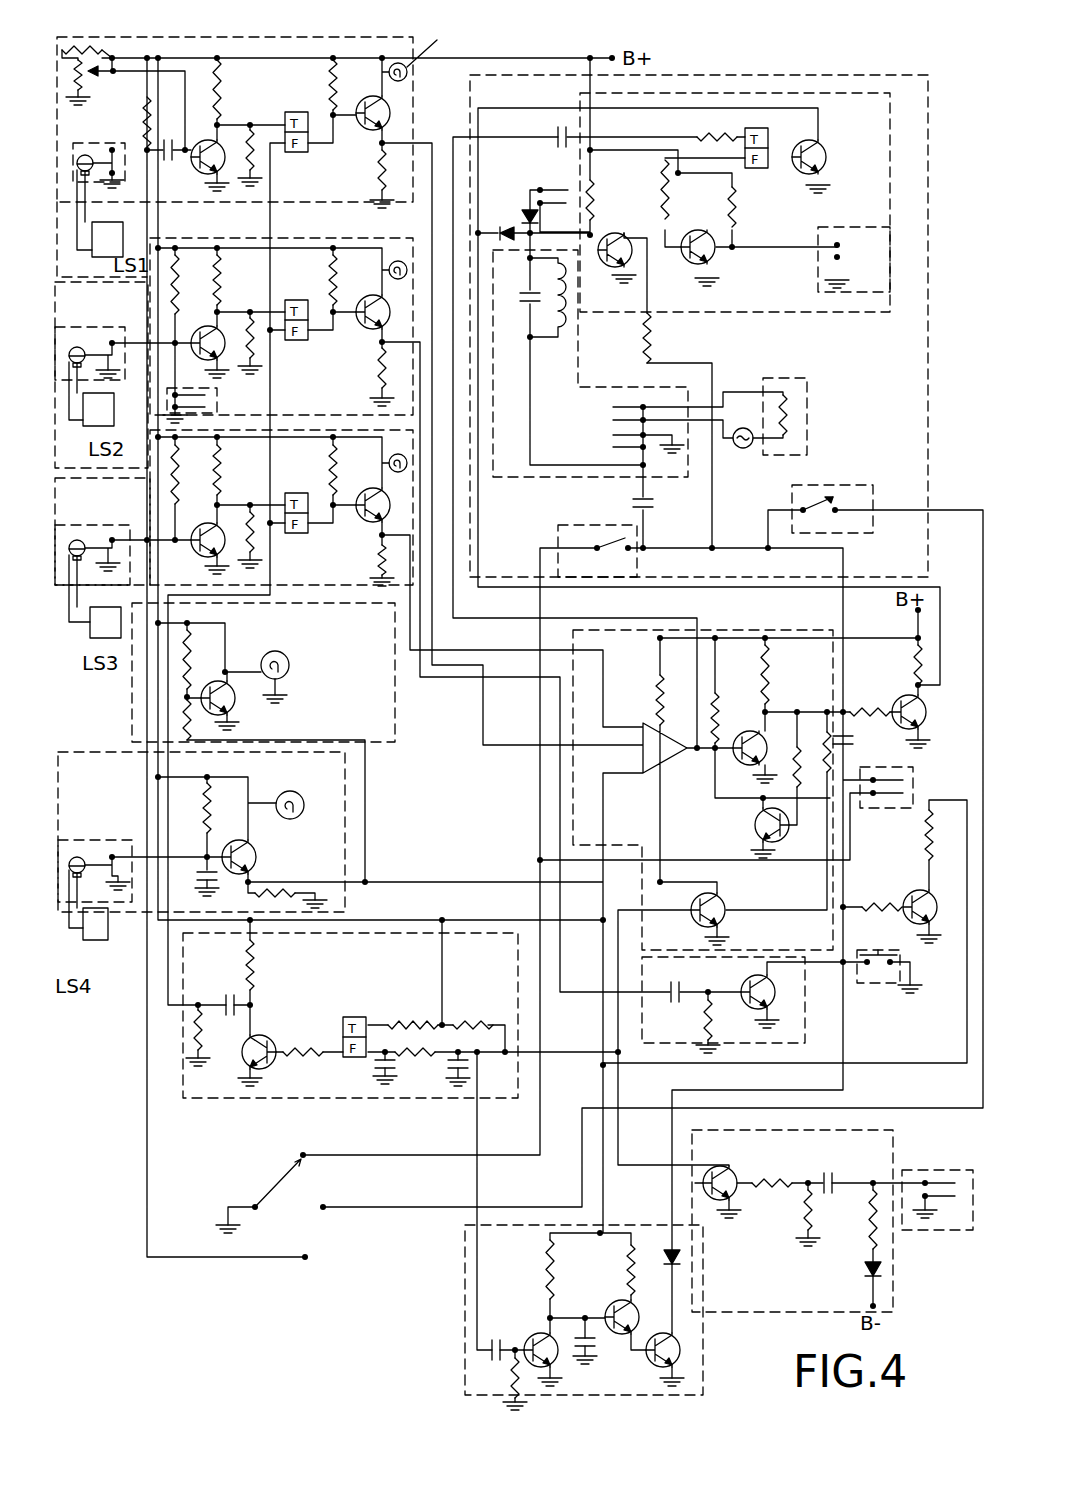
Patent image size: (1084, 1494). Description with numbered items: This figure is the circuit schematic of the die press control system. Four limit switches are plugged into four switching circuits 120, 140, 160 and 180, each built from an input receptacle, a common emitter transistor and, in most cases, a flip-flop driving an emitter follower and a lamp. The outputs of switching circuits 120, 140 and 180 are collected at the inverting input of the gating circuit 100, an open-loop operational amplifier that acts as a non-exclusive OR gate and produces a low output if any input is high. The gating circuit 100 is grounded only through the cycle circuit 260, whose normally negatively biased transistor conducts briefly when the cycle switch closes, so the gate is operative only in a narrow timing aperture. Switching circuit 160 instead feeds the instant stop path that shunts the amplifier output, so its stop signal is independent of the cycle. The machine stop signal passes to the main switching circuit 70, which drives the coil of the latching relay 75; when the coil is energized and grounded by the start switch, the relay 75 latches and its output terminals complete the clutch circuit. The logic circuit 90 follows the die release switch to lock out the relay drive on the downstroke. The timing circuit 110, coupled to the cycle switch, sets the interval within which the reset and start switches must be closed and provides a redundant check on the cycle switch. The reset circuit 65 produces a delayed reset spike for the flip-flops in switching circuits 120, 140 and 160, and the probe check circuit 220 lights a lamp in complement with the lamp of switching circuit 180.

The switching circuit 120 is at (264, 26).
The switching circuit 140 is at (319, 385).
The switching circuit 160 is at (304, 555).
The switching circuit 180 is at (102, 733).
The gating circuit 100 is at (507, 799).
The main switching circuit 70 is at (760, 38).
The logic circuit 90 is at (702, 38).
The latching relay 75 is at (604, 363).
The timing circuit 110 is at (537, 1188).
The cycle circuit 260 is at (879, 1093).
The reset circuit 65 is at (564, 1086).
The probe check circuit 220 is at (434, 706).